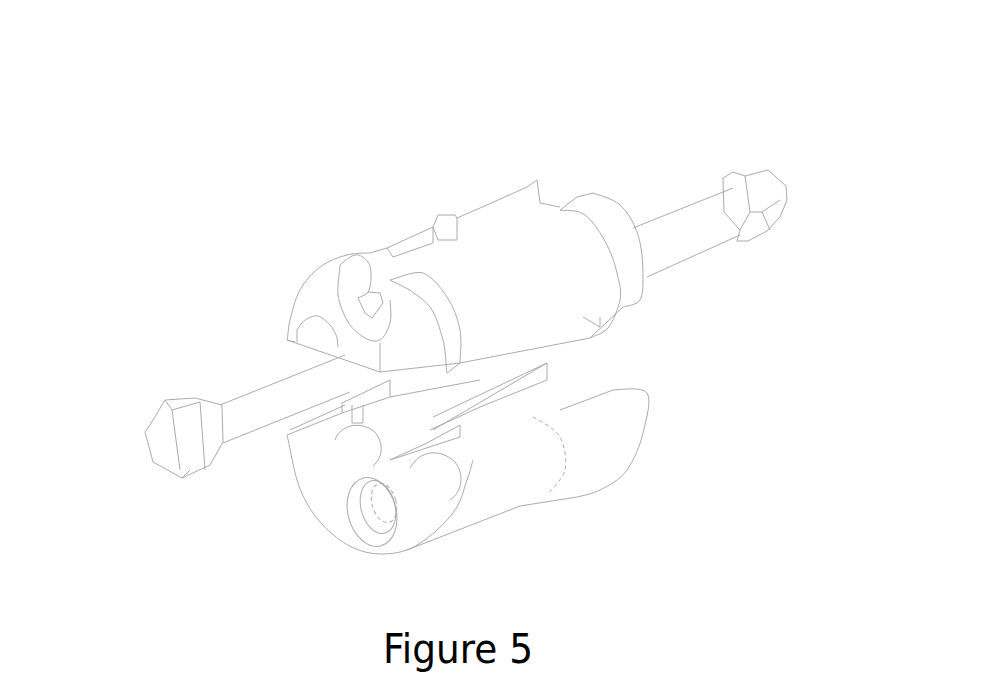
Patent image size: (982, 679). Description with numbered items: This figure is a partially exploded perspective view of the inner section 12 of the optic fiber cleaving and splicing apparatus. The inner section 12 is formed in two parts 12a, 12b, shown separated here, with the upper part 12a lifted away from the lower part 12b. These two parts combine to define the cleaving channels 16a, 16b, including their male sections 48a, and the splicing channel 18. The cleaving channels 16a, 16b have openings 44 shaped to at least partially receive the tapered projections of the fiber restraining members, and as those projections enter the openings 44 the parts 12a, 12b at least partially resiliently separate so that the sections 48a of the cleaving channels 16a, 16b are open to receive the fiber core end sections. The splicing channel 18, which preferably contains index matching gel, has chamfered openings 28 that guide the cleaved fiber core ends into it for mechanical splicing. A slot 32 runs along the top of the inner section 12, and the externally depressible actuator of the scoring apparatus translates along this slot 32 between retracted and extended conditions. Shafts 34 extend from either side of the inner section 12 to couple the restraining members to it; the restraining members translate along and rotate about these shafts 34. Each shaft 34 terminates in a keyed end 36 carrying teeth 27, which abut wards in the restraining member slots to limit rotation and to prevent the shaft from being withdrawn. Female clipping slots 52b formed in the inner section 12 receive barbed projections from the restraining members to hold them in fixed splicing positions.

The inner section 12 is at (262, 258).
The part of the inner section 12a is at (385, 247).
The part of the inner section 12b is at (492, 493).
The cleaving channel 16a is at (425, 478).
The cleaving channel 16b is at (310, 327).
The splicing channel 18 is at (375, 525).
The teeth 27 is at (173, 402).
The openings of the splicing channel 28 is at (357, 498).
The slot 32 is at (445, 240).
The shafts 34 is at (253, 385).
The keyed ends 36 is at (158, 445).
The openings of the cleaving channels 44 is at (323, 450).
The male section of the cleaving channel 48a is at (352, 408).
The female clipping slot 52b is at (350, 285).